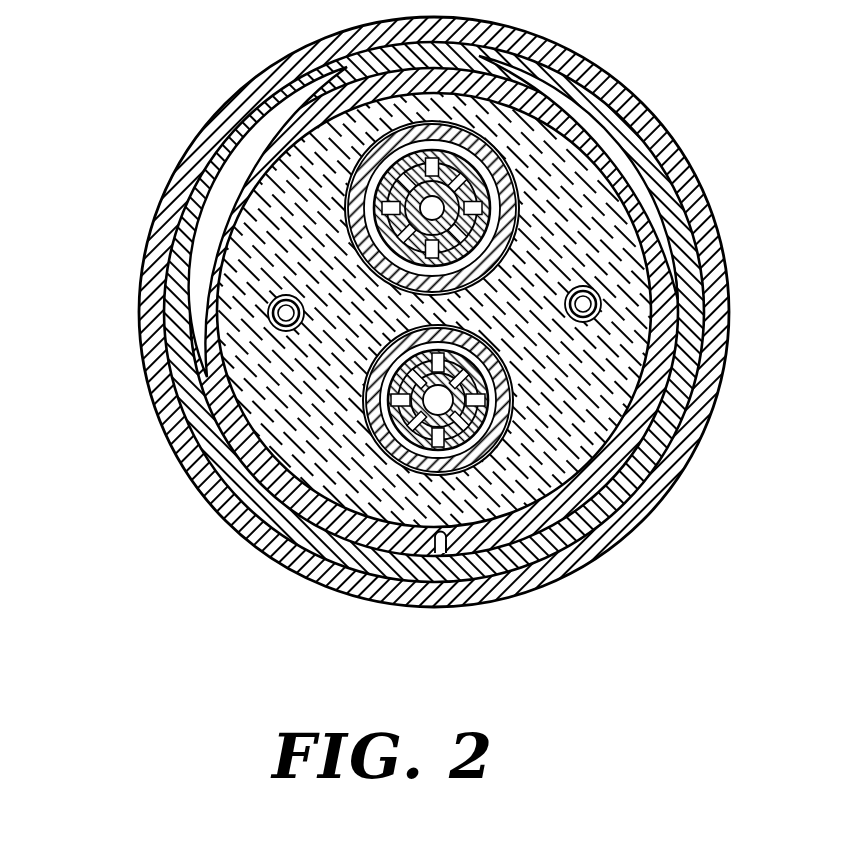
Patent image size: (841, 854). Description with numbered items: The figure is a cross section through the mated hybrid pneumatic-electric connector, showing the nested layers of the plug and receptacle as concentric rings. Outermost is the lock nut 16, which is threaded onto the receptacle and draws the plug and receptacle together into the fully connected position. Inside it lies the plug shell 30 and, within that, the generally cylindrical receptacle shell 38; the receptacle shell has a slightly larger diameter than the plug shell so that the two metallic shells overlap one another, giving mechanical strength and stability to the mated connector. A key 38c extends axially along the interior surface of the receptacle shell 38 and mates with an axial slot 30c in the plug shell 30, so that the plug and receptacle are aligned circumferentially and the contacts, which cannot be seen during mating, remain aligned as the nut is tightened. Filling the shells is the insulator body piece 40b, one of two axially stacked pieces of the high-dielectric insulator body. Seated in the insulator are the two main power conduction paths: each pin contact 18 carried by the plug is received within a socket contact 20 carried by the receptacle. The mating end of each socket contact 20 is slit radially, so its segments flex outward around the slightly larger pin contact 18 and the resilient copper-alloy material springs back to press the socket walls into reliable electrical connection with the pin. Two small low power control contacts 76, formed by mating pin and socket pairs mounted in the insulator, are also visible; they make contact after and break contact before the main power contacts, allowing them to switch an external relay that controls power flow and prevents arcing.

The lock nut 16 is at (723, 247).
The plug shell 30 is at (692, 316).
The receptacle shell 38 is at (675, 380).
The insulator body piece 40b is at (577, 173).
The socket contact 20 is at (490, 142).
The pin contact 18 is at (395, 194).
The low power control contacts 76 is at (267, 313).
The axial slot 30c is at (438, 556).
The key 38c is at (451, 556).